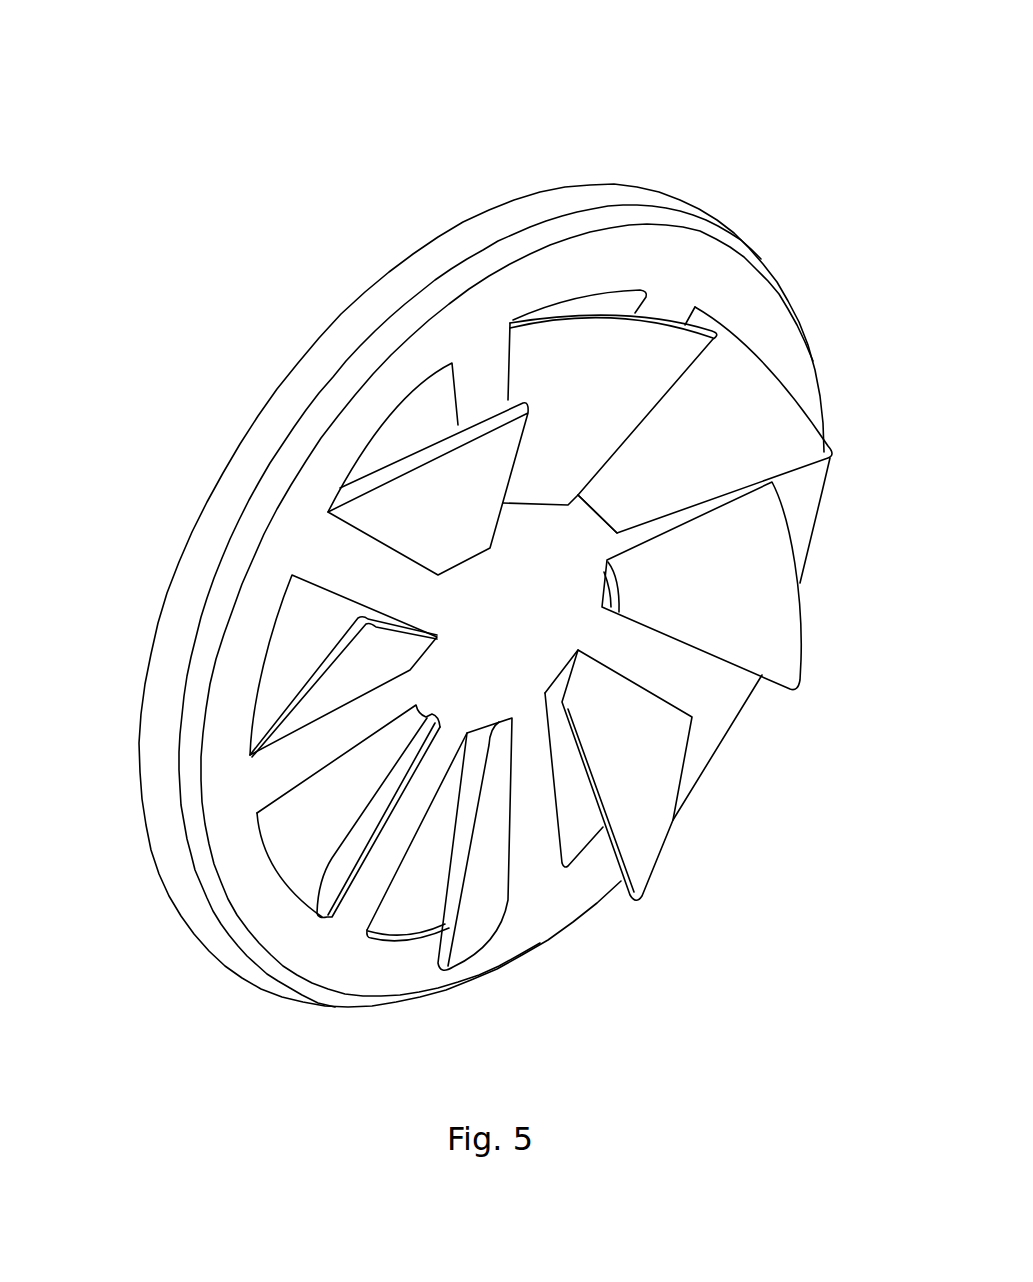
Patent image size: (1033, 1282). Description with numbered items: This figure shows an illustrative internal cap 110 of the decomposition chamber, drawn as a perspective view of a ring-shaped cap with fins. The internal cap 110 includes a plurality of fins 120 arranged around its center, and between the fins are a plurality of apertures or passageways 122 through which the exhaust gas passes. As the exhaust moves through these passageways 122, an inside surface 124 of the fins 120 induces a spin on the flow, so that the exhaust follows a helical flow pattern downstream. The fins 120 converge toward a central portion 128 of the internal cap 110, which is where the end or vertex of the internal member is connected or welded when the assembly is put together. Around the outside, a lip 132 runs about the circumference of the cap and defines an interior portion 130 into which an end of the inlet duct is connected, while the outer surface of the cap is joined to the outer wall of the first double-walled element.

The internal cap 110 is at (590, 105).
The fins 120 is at (758, 409).
The apertures or passageways 122 is at (428, 421).
The inside surface 124 is at (353, 820).
The central portion 128 is at (500, 632).
The interior portion 130 is at (145, 676).
The lip 132 is at (250, 463).